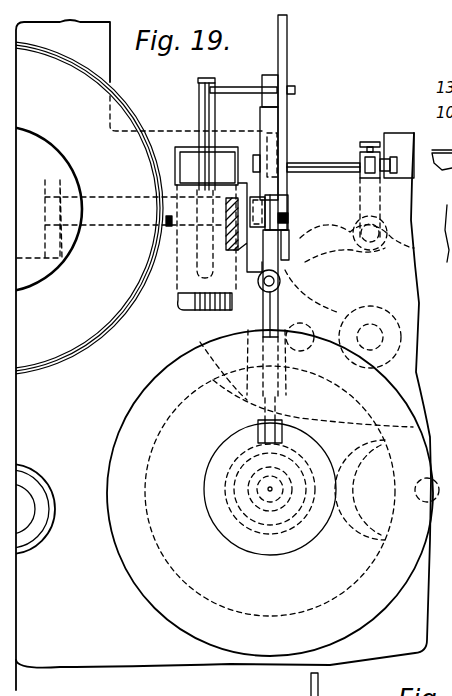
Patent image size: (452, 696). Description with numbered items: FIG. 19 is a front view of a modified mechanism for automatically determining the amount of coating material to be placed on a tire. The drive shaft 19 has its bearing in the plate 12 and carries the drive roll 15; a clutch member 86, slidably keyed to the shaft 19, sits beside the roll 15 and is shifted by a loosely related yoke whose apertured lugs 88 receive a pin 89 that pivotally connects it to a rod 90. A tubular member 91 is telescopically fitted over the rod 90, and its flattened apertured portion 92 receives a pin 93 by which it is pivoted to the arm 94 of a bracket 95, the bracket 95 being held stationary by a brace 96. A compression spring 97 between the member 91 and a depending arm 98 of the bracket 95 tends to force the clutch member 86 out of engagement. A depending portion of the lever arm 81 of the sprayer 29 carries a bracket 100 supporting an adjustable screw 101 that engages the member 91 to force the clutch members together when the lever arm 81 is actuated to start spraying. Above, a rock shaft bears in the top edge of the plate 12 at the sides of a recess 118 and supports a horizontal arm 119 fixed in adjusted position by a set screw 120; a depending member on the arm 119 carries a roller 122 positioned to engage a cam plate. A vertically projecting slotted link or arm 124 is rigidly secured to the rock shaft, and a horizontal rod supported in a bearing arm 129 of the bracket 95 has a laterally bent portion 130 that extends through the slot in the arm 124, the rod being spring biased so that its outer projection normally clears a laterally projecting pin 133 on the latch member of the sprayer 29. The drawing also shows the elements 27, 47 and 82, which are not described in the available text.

The plate 12 is at (104, 657).
The drive roll 15 is at (148, 600).
The drive shaft 19 is at (272, 500).
The drum ring 27 is at (78, 352).
The sprayer 29 is at (178, 298).
The bearing 47 is at (37, 545).
The lever arm 81 is at (175, 147).
The cylinder 82 is at (182, 280).
The clutch member 86 is at (308, 512).
The apertured lugs 88 is at (257, 436).
The pin 89 is at (253, 424).
The rod 90 is at (276, 407).
The tubular member 91 is at (280, 307).
The flattened apertured portion 92 is at (282, 200).
The pin 93 is at (289, 218).
The arm 94 is at (279, 197).
The bracket 95 is at (260, 115).
The brace 96 is at (122, 197).
The compression spring 97 is at (281, 281).
The depending arm 98 is at (288, 248).
The bracket 100 is at (248, 290).
The adjustable screw 101 is at (306, 348).
The recess 118 is at (337, 151).
The arm 119 is at (362, 176).
The set screw 120 is at (371, 141).
The roller 122 is at (416, 244).
The link or arm 124 is at (286, 62).
The bearing arm 129 is at (272, 117).
The laterally-bent portion 130 is at (293, 90).
The pin 133 is at (232, 87).